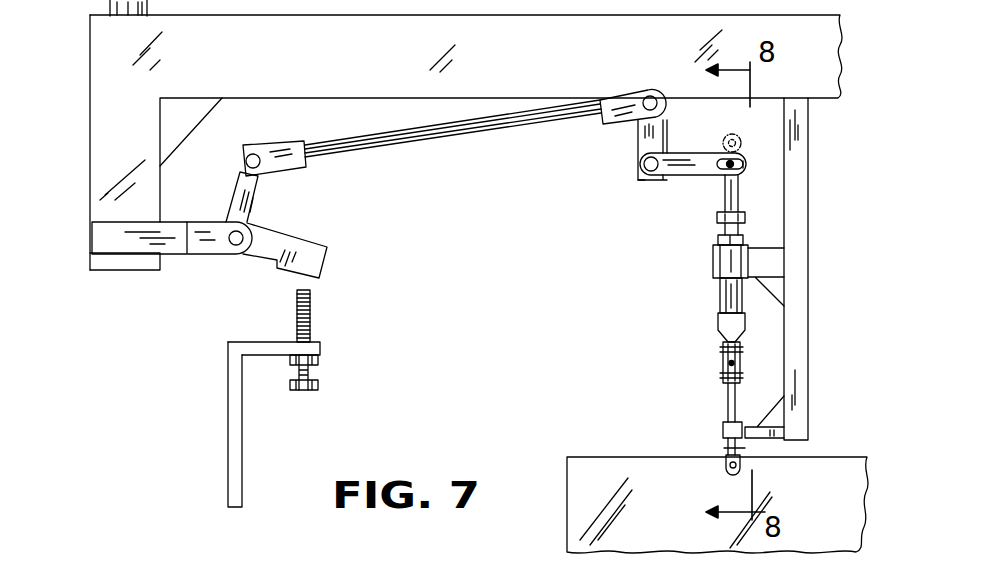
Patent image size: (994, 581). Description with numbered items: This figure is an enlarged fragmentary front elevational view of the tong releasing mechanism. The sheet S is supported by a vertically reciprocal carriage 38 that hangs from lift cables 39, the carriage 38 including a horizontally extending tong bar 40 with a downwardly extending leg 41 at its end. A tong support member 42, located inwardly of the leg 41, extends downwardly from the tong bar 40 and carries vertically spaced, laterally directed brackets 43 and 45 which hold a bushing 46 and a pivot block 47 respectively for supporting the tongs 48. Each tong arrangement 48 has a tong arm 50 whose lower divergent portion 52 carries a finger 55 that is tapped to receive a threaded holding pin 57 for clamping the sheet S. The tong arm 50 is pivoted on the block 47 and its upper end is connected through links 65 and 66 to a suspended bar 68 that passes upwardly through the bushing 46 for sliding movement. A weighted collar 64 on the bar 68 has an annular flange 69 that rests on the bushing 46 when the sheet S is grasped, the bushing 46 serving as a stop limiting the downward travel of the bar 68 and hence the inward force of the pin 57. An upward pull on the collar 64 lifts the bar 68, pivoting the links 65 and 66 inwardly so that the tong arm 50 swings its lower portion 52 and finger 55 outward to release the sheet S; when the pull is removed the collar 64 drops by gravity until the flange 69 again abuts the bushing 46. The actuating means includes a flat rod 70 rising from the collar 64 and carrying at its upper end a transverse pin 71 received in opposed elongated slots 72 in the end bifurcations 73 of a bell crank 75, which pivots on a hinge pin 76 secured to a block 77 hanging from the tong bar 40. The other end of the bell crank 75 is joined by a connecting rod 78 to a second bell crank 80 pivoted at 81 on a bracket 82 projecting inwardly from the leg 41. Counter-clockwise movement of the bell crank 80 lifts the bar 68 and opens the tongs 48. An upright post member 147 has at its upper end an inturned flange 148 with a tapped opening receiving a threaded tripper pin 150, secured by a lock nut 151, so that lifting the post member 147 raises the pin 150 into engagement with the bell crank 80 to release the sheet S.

The carriage 38 is at (428, 141).
The lift cables 39 is at (100, 2).
The tong bar 40 is at (420, 72).
The legs 41 is at (100, 128).
The tong support members 42 is at (800, 135).
The bracket 43 is at (777, 262).
The bracket 45 is at (768, 428).
The bushing 46 is at (712, 263).
The pivot block 47 is at (723, 428).
The tongs 48 is at (696, 376).
The tong arm 50 is at (730, 395).
The divergent portion 52 is at (743, 447).
The finger 55 is at (727, 455).
The holding pins 57 is at (728, 475).
The weighted collar 64 is at (742, 227).
The link 65 is at (740, 363).
The link 66 is at (723, 355).
The suspended bar 68 is at (725, 285).
The annular flange 69 is at (713, 238).
The flat rod 70 is at (730, 192).
The pin 71 is at (733, 158).
The elongated slots 72 is at (747, 170).
The end bifurcations 73 is at (722, 147).
The bell crank 75 is at (665, 180).
The hinge pin 76 is at (642, 172).
The block 77 is at (638, 140).
The connecting rod 78 is at (488, 130).
The bell crank 80 is at (298, 247).
The pivot 81 is at (233, 248).
The bracket 82 is at (173, 227).
The upright post member 147 is at (233, 422).
The inturned flange 148 is at (263, 345).
The tripper pin 150 is at (310, 312).
The lock nut 151 is at (317, 358).
The sheet S is at (575, 470).